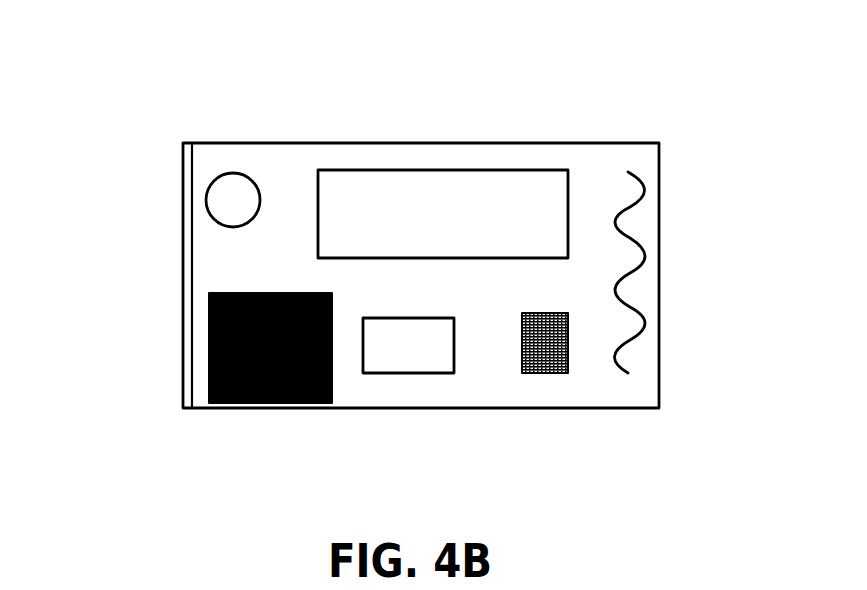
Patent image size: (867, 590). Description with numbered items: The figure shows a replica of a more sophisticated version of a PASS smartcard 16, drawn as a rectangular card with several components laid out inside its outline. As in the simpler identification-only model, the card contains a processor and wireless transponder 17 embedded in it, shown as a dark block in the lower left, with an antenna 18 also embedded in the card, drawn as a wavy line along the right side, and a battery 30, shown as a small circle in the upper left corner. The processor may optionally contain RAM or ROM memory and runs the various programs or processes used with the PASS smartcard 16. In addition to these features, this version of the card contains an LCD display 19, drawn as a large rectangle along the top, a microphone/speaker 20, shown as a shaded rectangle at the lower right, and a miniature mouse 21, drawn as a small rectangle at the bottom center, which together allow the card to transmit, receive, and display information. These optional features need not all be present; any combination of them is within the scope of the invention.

The PASS smartcard 16 is at (283, 158).
The processor and wireless transponder 17 is at (220, 355).
The antenna 18 is at (633, 238).
The LCD display 19 is at (402, 185).
The microphone/speaker 20 is at (543, 355).
The miniature mouse 21 is at (410, 355).
The battery 30 is at (215, 187).